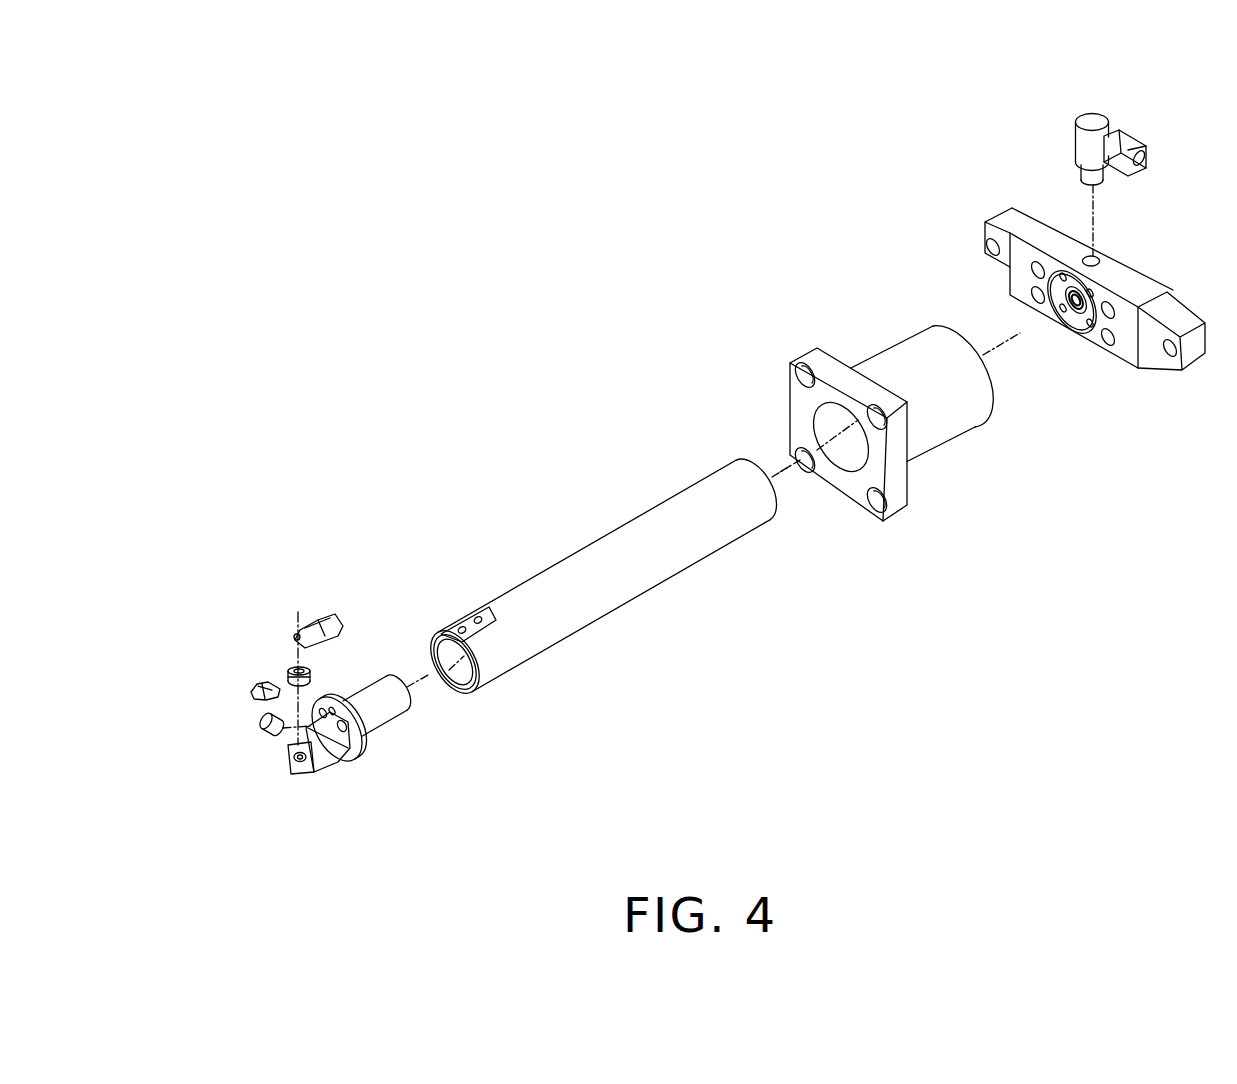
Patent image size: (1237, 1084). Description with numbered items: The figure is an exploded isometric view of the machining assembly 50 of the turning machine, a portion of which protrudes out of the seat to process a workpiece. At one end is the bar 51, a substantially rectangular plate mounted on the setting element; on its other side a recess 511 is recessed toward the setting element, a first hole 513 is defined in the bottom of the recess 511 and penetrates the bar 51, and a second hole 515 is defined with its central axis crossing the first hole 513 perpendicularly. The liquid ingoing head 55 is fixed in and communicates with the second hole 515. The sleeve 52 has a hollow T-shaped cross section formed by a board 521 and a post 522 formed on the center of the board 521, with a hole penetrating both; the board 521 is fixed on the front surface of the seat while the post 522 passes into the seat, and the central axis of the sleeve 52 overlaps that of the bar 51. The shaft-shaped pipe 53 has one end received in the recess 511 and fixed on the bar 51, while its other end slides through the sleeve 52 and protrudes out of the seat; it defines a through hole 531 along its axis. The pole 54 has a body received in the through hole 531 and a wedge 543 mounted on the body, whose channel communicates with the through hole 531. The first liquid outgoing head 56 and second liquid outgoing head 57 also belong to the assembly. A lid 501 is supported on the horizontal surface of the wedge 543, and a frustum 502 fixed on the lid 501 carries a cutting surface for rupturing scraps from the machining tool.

The machining assembly 50 is at (833, 629).
The bar 51 is at (1069, 308).
The recess 511 is at (1085, 308).
The first hole 513 is at (1047, 286).
The second hole 515 is at (1097, 260).
The sleeve 52 is at (882, 256).
The board 521 is at (817, 360).
The post 522 is at (903, 363).
The pipe 53 is at (648, 543).
The through hole 531 is at (452, 697).
The pole 54 is at (370, 723).
The wedge 543 is at (328, 760).
The liquid ingoing head 55 is at (1093, 120).
The first liquid outgoing head 56 is at (318, 710).
The second liquid outgoing head 57 is at (262, 737).
The lid 501 is at (307, 623).
The frustum 502 is at (293, 670).